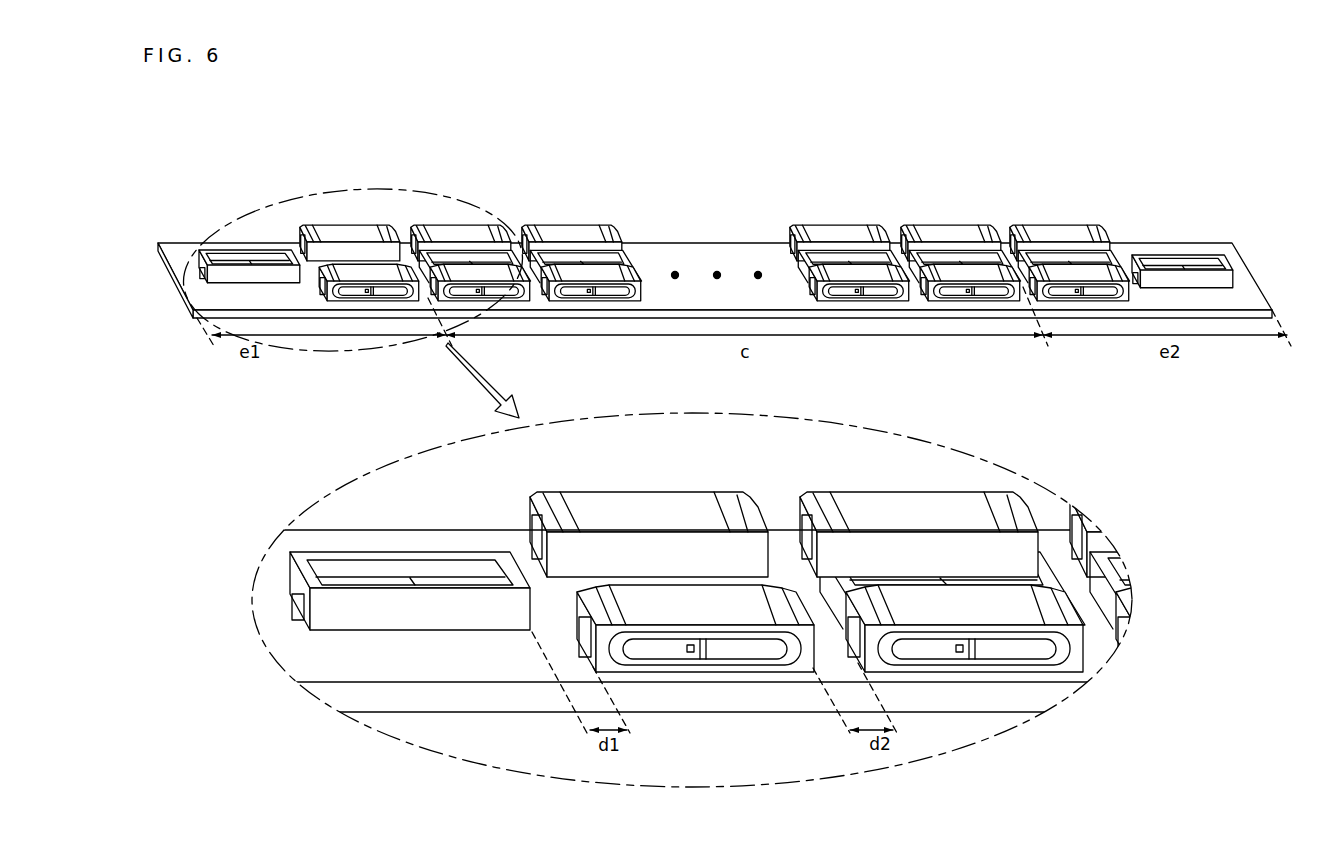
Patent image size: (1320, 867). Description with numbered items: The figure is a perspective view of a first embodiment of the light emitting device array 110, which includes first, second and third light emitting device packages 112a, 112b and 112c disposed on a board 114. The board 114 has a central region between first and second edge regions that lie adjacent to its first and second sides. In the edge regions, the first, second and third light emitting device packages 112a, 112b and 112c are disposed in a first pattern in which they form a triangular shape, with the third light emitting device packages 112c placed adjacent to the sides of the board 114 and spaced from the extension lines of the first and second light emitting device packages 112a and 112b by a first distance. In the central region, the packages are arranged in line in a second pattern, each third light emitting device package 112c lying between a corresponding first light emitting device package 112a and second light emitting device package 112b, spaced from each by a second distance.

The light emitting device array 110 is at (1142, 204).
The first light emitting device package 112a is at (320, 227).
The second light emitting device package 112b is at (388, 272).
The third light emitting device package 112c is at (238, 257).
The board 114 is at (1209, 245).